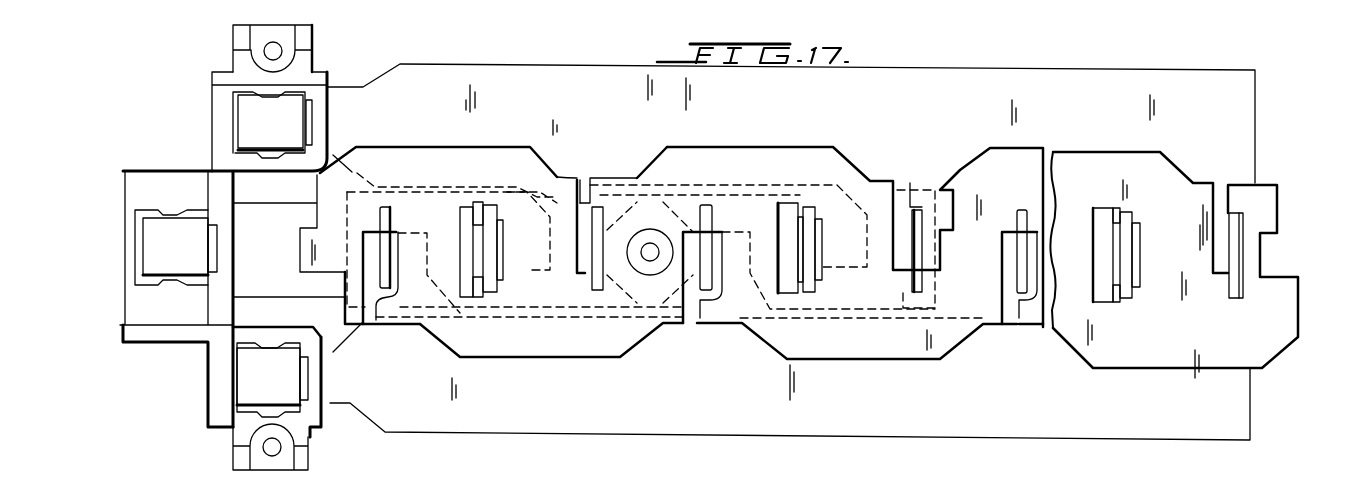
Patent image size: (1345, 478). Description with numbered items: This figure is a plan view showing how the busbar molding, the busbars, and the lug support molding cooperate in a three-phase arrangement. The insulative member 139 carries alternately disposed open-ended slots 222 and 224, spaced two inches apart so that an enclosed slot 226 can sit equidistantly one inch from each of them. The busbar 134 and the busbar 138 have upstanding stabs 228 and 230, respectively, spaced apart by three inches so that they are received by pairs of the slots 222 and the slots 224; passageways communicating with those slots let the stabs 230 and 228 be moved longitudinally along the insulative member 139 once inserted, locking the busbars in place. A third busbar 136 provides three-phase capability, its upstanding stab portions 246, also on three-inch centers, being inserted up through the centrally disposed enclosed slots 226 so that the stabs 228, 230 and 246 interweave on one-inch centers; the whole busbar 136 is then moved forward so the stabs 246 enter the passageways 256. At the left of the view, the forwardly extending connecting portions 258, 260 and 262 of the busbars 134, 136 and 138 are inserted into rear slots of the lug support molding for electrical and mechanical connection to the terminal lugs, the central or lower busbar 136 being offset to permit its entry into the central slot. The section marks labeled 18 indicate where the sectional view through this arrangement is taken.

The section line 18 is at (196, 365).
The busbar 134 is at (580, 409).
The third busbar 136 is at (258, 299).
The busbar 138 is at (598, 110).
The insulative member 139 is at (787, 143).
The open-ended slot 222 is at (582, 180).
The open-ended slot 224 is at (368, 320).
The enclosed slot 226 is at (787, 288).
The upstanding stab 228 is at (593, 290).
The upstanding stab 230 is at (385, 207).
The upstanding stab portion 246 is at (493, 205).
The passageway 256 is at (822, 268).
The forwardly extending connecting portion 258 is at (289, 388).
The forwardly extending connecting portion 260 is at (194, 258).
The forwardly extending connecting portion 262 is at (290, 133).